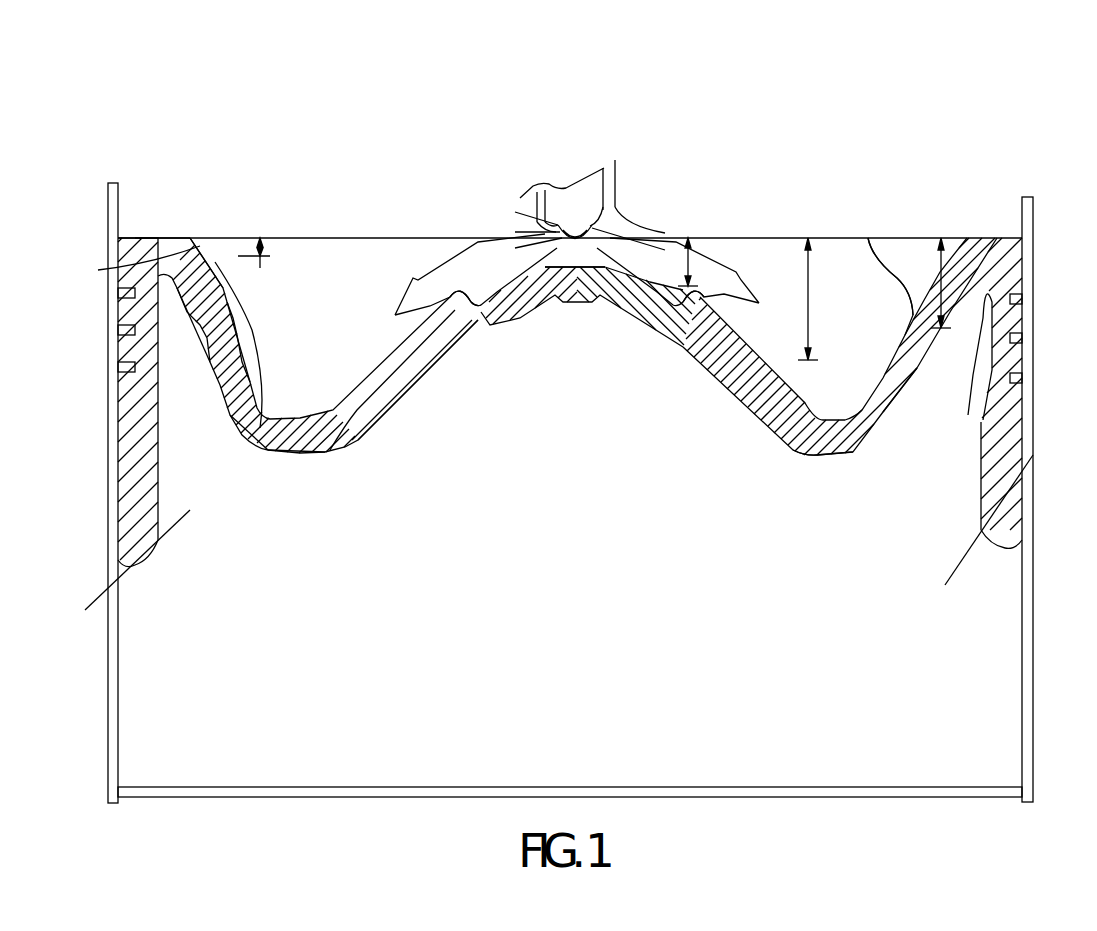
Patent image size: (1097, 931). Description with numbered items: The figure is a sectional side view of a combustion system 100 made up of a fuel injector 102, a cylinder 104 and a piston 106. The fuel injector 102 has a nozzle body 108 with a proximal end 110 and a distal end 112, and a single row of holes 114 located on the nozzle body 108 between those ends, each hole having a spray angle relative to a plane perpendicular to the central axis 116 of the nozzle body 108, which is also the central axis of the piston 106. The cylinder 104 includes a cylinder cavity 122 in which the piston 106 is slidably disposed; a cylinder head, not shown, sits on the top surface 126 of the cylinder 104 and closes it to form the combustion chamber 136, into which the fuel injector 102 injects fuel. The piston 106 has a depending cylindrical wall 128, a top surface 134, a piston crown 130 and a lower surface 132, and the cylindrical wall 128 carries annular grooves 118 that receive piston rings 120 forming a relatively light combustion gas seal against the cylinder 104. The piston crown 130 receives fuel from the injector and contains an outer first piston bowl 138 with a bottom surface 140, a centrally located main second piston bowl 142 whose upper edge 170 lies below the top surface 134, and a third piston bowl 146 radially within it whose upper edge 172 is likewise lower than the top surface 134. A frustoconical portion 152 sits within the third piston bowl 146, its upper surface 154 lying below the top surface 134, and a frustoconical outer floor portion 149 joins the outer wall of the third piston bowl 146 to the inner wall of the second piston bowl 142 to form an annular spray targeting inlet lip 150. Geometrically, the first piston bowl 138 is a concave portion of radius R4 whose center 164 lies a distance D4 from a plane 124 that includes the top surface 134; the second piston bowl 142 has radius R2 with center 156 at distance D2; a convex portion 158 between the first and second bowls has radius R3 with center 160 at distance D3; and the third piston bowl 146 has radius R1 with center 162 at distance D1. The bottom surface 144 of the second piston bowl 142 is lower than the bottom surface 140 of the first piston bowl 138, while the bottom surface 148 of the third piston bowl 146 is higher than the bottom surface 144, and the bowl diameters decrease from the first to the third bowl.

The combustion system 100 is at (1026, 86).
The fuel injector 102 is at (600, 158).
The cylinder 104 is at (1030, 236).
The piston 106 is at (987, 246).
The nozzle body 108 is at (618, 210).
The proximal end 110 is at (605, 180).
The distal end 112 is at (578, 245).
The holes 114 is at (521, 222).
The central axis 116 is at (575, 165).
The annular grooves 118 is at (984, 405).
The piston rings 120 is at (1022, 380).
The cylinder cavity 122 is at (118, 655).
The plane 124 is at (768, 238).
The top surface 126 is at (113, 183).
The cylindrical wall 128 is at (145, 480).
The piston crown 130 is at (400, 290).
The lower surface 132 is at (492, 456).
The top surface 134 is at (174, 238).
The combustion chamber 136 is at (108, 213).
The first piston bowl 138 is at (132, 266).
The bottom surface 140 is at (205, 335).
The second piston bowl 142 is at (242, 420).
The bottom surface 144 is at (318, 448).
The third piston bowl 146 is at (476, 322).
The bottom surface 148 is at (662, 300).
The frustoconical outer floor portion 149 is at (383, 385).
The inlet lip 150 is at (462, 325).
The frustoconical portion 152 is at (626, 300).
The upper surface 154 is at (572, 290).
The center 156 is at (818, 455).
The convex portion 158 is at (868, 238).
The center 160 is at (950, 330).
The center 162 is at (692, 300).
The center 164 is at (871, 525).
The upper edge 170 is at (237, 302).
The upper edge 172 is at (186, 238).
The distance D1 is at (690, 262).
The distance D2 is at (812, 302).
The distance D3 is at (938, 244).
The distance D4 is at (272, 244).
The radius R1 is at (666, 300).
The radius R2 is at (810, 470).
The radius R3 is at (920, 440).
The radius R4 is at (240, 255).